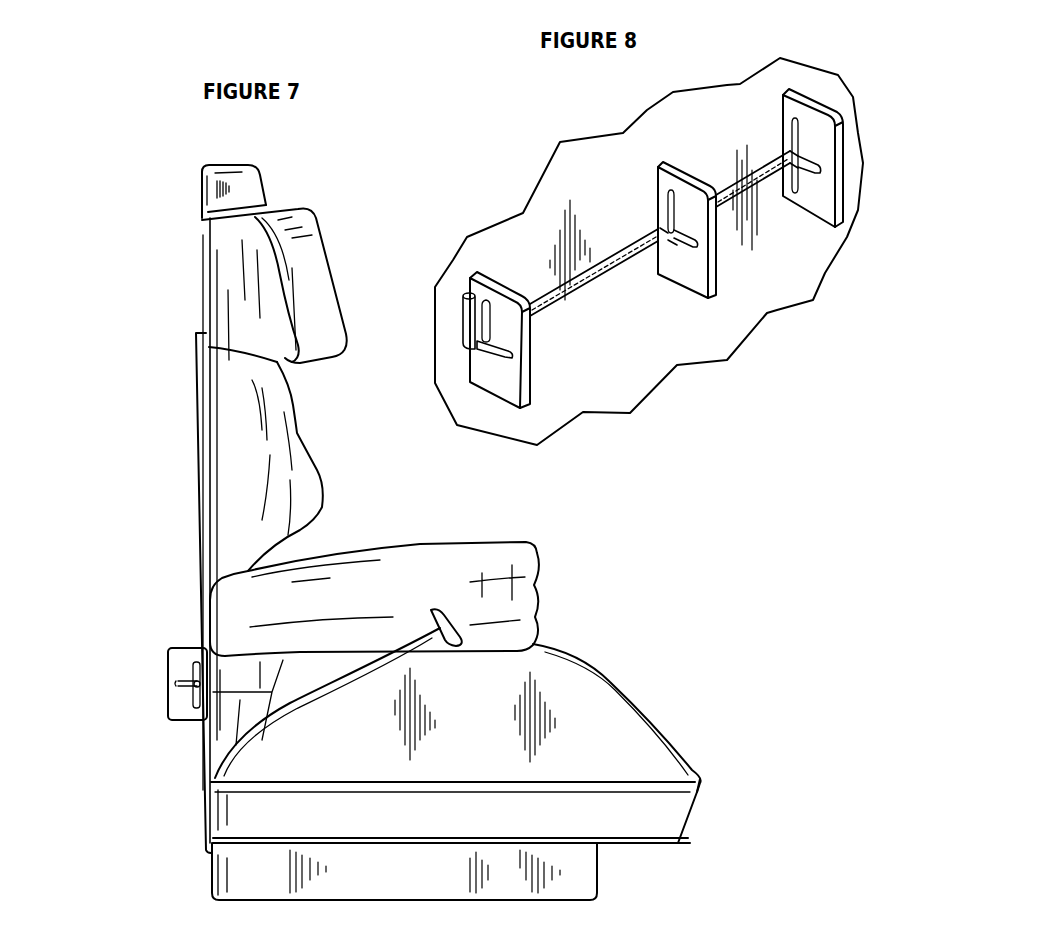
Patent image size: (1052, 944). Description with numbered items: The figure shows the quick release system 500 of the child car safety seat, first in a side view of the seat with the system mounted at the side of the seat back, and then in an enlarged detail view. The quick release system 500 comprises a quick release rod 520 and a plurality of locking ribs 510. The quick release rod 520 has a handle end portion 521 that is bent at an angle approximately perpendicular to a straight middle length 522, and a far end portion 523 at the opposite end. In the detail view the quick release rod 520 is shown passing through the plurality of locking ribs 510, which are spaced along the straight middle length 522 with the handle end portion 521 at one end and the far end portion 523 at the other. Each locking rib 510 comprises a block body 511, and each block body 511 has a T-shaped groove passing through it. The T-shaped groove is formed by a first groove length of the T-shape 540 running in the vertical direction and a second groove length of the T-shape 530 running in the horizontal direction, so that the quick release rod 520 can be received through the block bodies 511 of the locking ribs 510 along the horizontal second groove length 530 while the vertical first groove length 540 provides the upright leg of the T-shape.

In FIG. 7, the quick release system 500 is at (112, 675).
In FIG. 8, the quick release system 500 is at (657, 255).
In FIG. 7, the locking ribs 510 is at (180, 705).
In FIG. 8, the locking ribs 510 is at (645, 275).
In FIG. 8, the block body 511 is at (697, 282).
In FIG. 7, the quick release rod 520 is at (193, 680).
In FIG. 8, the quick release rod 520 is at (572, 297).
In FIG. 8, the handle end portion 521 is at (462, 335).
In FIG. 8, the straight middle length 522 is at (653, 227).
In FIG. 8, the far end portion 523 is at (790, 153).
In FIG. 8, the second groove length of the T-shape 530 is at (820, 165).
In FIG. 8, the first groove length of the T-shape 540 is at (803, 192).